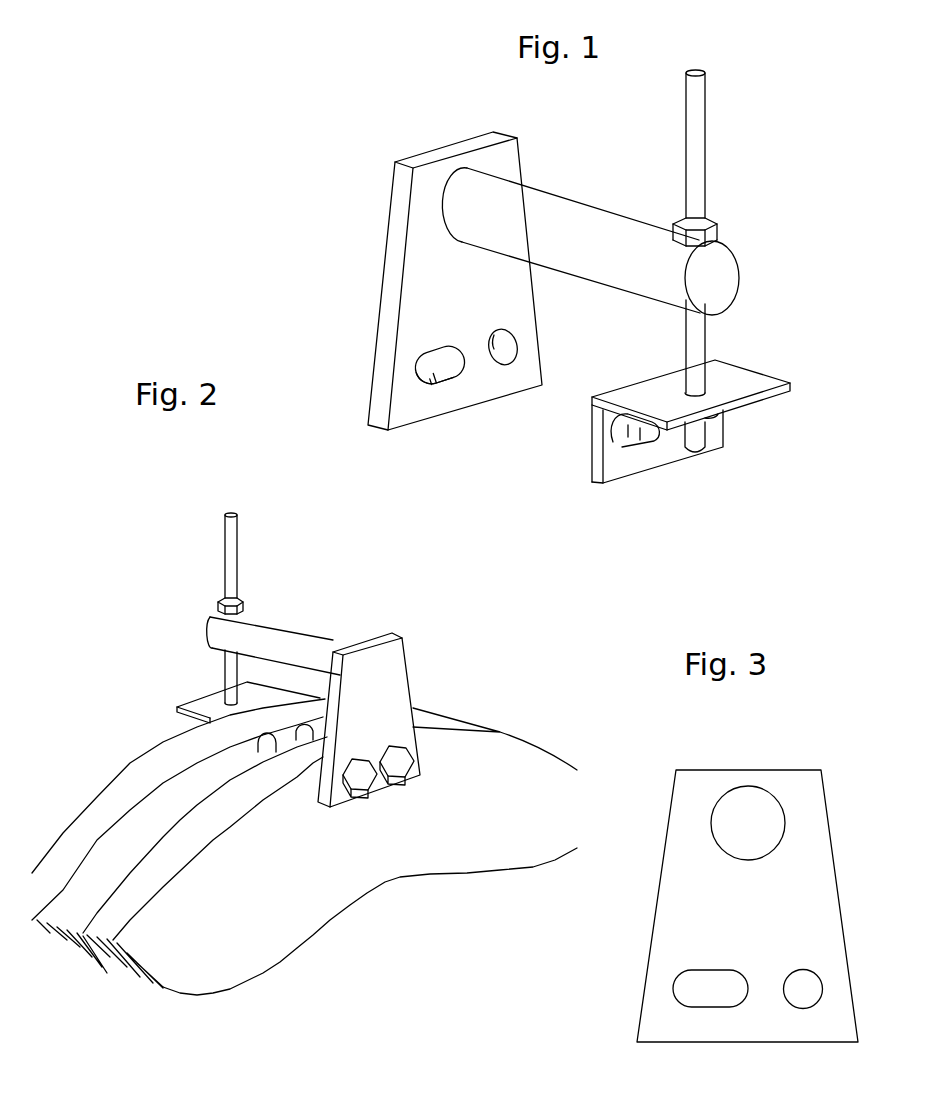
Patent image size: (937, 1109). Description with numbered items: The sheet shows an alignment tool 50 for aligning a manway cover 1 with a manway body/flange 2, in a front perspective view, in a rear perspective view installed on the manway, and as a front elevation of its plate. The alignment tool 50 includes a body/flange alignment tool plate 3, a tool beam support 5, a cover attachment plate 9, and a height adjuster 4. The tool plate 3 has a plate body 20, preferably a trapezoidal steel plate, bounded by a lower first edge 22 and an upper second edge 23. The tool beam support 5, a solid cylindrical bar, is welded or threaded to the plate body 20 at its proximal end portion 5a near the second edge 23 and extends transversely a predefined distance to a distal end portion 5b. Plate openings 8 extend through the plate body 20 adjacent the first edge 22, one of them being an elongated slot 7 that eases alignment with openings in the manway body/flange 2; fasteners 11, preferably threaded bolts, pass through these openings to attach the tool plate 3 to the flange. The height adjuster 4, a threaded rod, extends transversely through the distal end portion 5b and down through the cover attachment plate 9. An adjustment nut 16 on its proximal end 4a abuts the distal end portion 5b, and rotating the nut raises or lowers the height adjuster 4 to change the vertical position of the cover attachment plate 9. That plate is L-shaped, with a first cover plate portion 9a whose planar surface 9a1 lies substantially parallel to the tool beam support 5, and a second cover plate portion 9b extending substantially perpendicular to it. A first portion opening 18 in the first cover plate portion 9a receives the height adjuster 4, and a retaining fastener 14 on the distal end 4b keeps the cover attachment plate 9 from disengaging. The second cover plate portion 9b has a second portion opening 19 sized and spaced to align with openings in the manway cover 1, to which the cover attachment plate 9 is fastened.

In FIG. 1, the alignment tool 50 is at (287, 107).
In FIG. 2, the alignment tool 50 is at (143, 548).
In FIG. 2, the manway cover 1 is at (158, 758).
In FIG. 2, the manway body/flange 2 is at (467, 733).
In FIG. 1, the body/flange alignment tool plate 3 is at (397, 252).
In FIG. 2, the body/flange alignment tool plate 3 is at (390, 653).
In FIG. 3, the body/flange alignment tool plate 3 is at (818, 762).
In FIG. 1, the height adjuster 4 is at (697, 200).
In FIG. 2, the height adjuster 4 is at (220, 533).
In FIG. 1, the proximal end of height adjuster 4a is at (697, 163).
In FIG. 1, the distal end of height adjuster 4b is at (695, 442).
In FIG. 1, the tool beam support 5 is at (560, 192).
In FIG. 2, the tool beam support 5 is at (275, 617).
In FIG. 3, the tool beam support 5 is at (748, 812).
In FIG. 1, the proximal end portion of tool beam support 5a is at (473, 180).
In FIG. 1, the distal end portion of tool beam support 5b is at (670, 273).
In FIG. 1, the elongated slot 7 is at (427, 353).
In FIG. 3, the elongated slot 7 is at (688, 970).
In FIG. 1, the plate openings 8 is at (497, 365).
In FIG. 3, the plate openings 8 is at (800, 1008).
In FIG. 1, the cover attachment plate 9 is at (780, 380).
In FIG. 2, the cover attachment plate 9 is at (192, 697).
In FIG. 1, the first cover plate portion 9a is at (760, 375).
In FIG. 1, the planar surface of first cover plate portion 9a1 is at (733, 385).
In FIG. 1, the second cover plate portion 9b is at (633, 475).
In FIG. 2, the fasteners 11 is at (413, 747).
In FIG. 1, the retaining fastener 14 is at (705, 417).
In FIG. 1, the adjustment nut 16 is at (707, 233).
In FIG. 1, the first portion opening 18 is at (687, 392).
In FIG. 1, the second portion opening 19 is at (613, 442).
In FIG. 1, the plate body 20 is at (413, 280).
In FIG. 3, the plate body 20 is at (767, 932).
In FIG. 3, the first edge 22 is at (662, 1040).
In FIG. 3, the second edge 23 is at (688, 770).